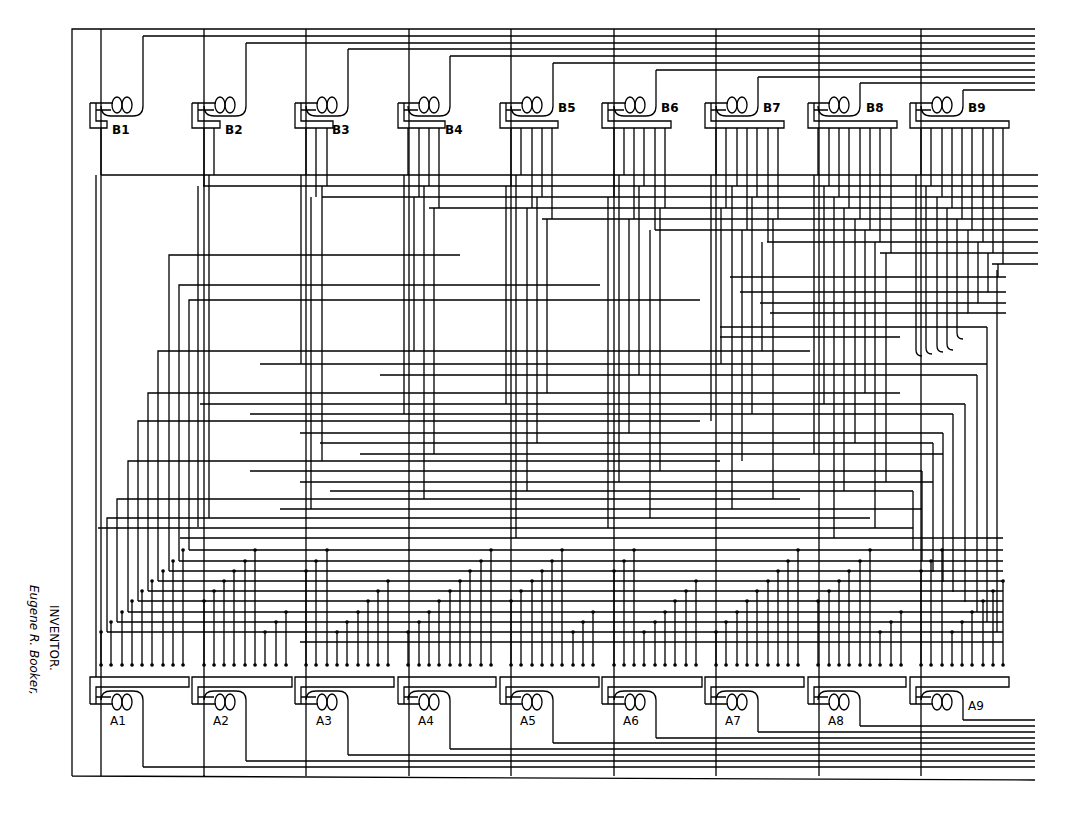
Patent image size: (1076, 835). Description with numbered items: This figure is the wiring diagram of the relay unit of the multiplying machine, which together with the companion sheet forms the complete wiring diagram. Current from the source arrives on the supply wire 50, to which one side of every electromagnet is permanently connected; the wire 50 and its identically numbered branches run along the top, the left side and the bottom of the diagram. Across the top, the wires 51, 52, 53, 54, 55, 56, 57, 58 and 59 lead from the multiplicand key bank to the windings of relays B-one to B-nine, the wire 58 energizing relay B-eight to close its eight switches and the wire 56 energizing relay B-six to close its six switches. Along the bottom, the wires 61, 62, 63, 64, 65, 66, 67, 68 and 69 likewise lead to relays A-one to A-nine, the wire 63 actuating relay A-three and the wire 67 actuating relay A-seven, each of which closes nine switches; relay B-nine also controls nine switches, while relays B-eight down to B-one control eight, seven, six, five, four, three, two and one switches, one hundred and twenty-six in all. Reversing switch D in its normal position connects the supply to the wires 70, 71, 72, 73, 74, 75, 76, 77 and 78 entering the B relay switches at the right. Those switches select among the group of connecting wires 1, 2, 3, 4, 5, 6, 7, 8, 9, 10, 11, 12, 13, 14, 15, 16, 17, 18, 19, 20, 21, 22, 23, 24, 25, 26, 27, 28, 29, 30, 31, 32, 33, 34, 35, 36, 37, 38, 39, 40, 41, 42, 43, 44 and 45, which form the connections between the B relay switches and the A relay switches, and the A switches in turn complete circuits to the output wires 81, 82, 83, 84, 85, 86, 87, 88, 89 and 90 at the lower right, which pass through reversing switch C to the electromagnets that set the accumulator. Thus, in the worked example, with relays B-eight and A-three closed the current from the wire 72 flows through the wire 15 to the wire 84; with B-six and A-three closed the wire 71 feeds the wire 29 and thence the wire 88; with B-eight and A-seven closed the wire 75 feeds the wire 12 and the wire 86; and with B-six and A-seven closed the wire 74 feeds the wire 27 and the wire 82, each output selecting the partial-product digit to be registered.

The connecting wire 1 is at (998, 277).
The connecting wire 2 is at (988, 292).
The connecting wire 3 is at (978, 303).
The connecting wire 4 is at (968, 313).
The connecting wire 5 is at (957, 333).
The connecting wire 6 is at (958, 344).
The connecting wire 7 is at (945, 346).
The connecting wire 8 is at (933, 348).
The connecting wire 9 is at (920, 350).
The connecting wire 10 is at (886, 385).
The connecting wire 11 is at (875, 359).
The connecting wire 12 is at (800, 497).
The connecting wire 13 is at (855, 363).
The connecting wire 14 is at (844, 291).
The connecting wire 15 is at (388, 450).
The connecting wire 16 is at (824, 257).
The connecting wire 17 is at (814, 247).
The connecting wire 18 is at (773, 314).
The connecting wire 19 is at (762, 385).
The connecting wire 20 is at (752, 393).
The connecting wire 21 is at (742, 311).
The connecting wire 22 is at (732, 293).
The connecting wire 23 is at (721, 275).
The connecting wire 24 is at (711, 257).
The connecting wire 25 is at (675, 243).
The connecting wire 26 is at (650, 304).
The connecting wire 27 is at (639, 316).
The connecting wire 28 is at (629, 304).
The connecting wire 29 is at (357, 408).
The connecting wire 30 is at (608, 243).
The connecting wire 31 is at (547, 243).
The connecting wire 32 is at (537, 296).
The connecting wire 33 is at (527, 309).
The connecting wire 34 is at (516, 296).
The connecting wire 35 is at (506, 243).
The connecting wire 36 is at (434, 228).
The connecting wire 37 is at (424, 240).
The connecting wire 38 is at (414, 240).
The connecting wire 39 is at (404, 228).
The connecting wire 40 is at (322, 228).
The connecting wire 41 is at (311, 240).
The connecting wire 42 is at (301, 233).
The connecting wire 43 is at (209, 228).
The connecting wire 44 is at (198, 228).
The connecting wire 45 is at (96, 222).
The supply wire 50 is at (148, 790).
The relay B1 winding lead 51 is at (155, 39).
The relay B2 winding lead 52 is at (258, 46).
The relay B3 winding lead 53 is at (360, 52).
The relay B4 winding lead 54 is at (462, 59).
The relay B5 winding lead 55 is at (565, 66).
The relay wire 56 is at (668, 73).
The relay B7 winding lead 57 is at (770, 80).
The relay wire 58 is at (872, 86).
The relay B9 winding lead 59 is at (975, 93).
The relay A1 winding lead 61 is at (952, 787).
The relay A2 winding lead 62 is at (250, 745).
The relay wire 63 is at (352, 744).
The relay A4 winding lead 64 is at (454, 738).
The relay A5 winding lead 65 is at (990, 790).
The relay A6 winding lead 66 is at (660, 726).
The relay wire 67 is at (762, 721).
The relay A8 winding lead 68 is at (864, 715).
The relay A9 winding lead 69 is at (967, 709).
The relay unit supply wire 70 is at (159, 184).
The relay unit supply wire 71 is at (261, 195).
The relay unit supply wire 72 is at (356, 207).
The relay unit supply wire 73 is at (467, 218).
The relay unit supply wire 74 is at (577, 229).
The relay unit supply wire 75 is at (682, 240).
The relay unit supply wire 76 is at (1038, 242).
The relay unit supply wire 77 is at (1038, 253).
The relay unit supply wire 78 is at (1046, 258).
The output wire 81 is at (1010, 645).
The output wire 82 is at (1003, 632).
The output wire 83 is at (1003, 622).
The output wire 84 is at (1003, 612).
The output wire 85 is at (1003, 601).
The output wire 86 is at (1003, 591).
The output wire 87 is at (1003, 581).
The output wire 88 is at (1003, 571).
The output wire 89 is at (1003, 561).
The output conductor 90 is at (1003, 550).